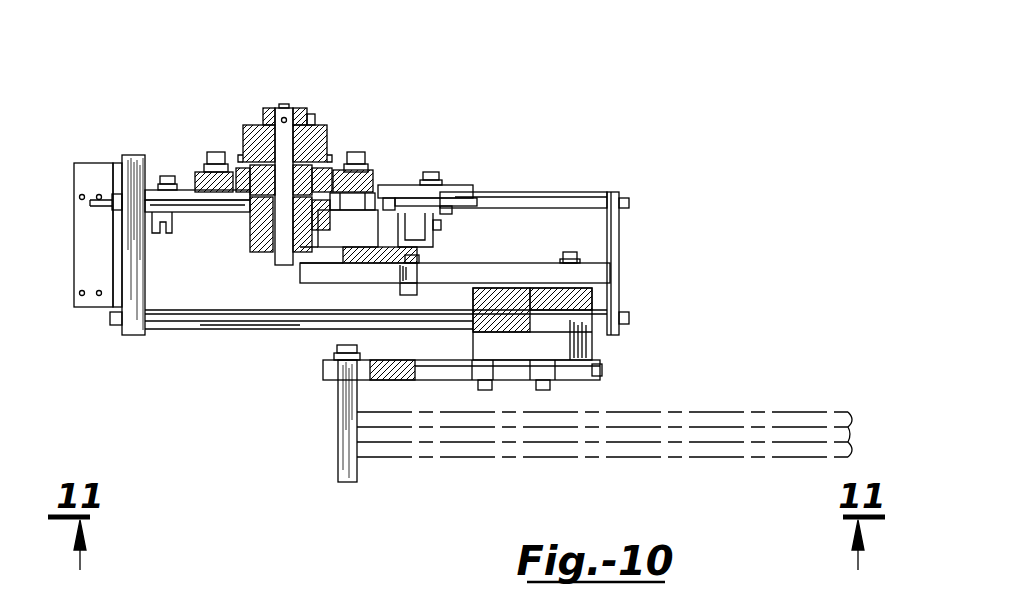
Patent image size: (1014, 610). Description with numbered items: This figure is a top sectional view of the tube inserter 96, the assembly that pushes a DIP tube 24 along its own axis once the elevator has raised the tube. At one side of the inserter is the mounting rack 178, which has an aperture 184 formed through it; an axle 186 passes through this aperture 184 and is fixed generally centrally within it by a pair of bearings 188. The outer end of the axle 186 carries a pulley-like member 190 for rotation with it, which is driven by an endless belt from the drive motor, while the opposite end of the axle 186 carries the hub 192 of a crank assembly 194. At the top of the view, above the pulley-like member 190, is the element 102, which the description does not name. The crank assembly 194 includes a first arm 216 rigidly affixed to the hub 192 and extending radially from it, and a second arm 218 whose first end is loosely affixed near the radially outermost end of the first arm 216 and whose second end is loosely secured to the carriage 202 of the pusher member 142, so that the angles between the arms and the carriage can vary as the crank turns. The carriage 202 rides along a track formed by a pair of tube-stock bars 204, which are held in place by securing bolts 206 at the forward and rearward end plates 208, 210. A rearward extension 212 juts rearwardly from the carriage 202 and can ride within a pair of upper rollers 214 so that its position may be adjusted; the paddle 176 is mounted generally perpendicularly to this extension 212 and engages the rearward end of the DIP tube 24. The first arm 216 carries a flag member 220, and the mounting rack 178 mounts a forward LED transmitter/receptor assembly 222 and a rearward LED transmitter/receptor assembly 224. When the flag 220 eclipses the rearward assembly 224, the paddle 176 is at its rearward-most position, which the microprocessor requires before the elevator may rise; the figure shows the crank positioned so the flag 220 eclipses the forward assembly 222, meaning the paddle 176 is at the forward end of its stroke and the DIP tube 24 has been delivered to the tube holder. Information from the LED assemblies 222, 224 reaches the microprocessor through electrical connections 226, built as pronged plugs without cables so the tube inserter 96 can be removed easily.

The DIP tube 24 is at (655, 412).
The tube inserter 96 is at (451, 168).
The shaft 102 is at (286, 102).
The pusher member 142 is at (322, 377).
The paddle 176 is at (340, 421).
The mounting rack 178 is at (537, 192).
The aperture 184 is at (321, 128).
The axle 186 is at (256, 250).
The bearings 188 is at (250, 196).
The pulley-like member 190 is at (253, 124).
The hub 192 is at (273, 264).
The crank assembly 194 is at (306, 268).
The carriage 202 is at (480, 347).
The tube-stock bars 204 is at (175, 331).
The securing bolts 206 is at (112, 321).
The forward end plate 208 is at (618, 253).
The rearward end plate 210 is at (130, 166).
The rearward extension 212 is at (443, 372).
The upper rollers 214 is at (478, 384).
The first arm 216 is at (378, 258).
The second arm 218 is at (513, 265).
The flag member 220 is at (420, 231).
The forward LED transmitter/receptor assembly 222 is at (407, 213).
The rearward LED transmitter/receptor assembly 224 is at (166, 234).
The electrical connections 226 is at (100, 210).